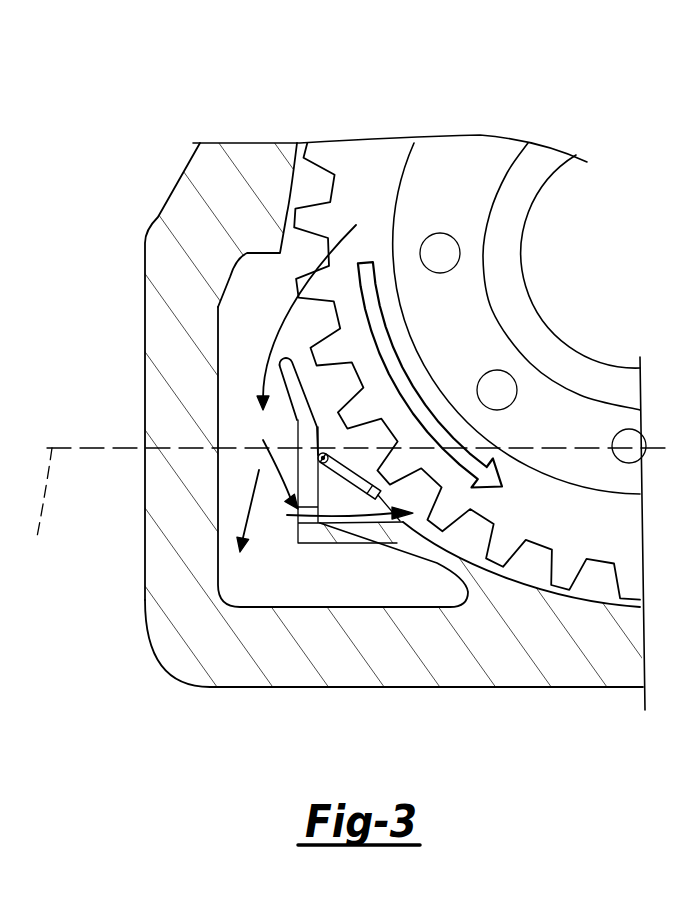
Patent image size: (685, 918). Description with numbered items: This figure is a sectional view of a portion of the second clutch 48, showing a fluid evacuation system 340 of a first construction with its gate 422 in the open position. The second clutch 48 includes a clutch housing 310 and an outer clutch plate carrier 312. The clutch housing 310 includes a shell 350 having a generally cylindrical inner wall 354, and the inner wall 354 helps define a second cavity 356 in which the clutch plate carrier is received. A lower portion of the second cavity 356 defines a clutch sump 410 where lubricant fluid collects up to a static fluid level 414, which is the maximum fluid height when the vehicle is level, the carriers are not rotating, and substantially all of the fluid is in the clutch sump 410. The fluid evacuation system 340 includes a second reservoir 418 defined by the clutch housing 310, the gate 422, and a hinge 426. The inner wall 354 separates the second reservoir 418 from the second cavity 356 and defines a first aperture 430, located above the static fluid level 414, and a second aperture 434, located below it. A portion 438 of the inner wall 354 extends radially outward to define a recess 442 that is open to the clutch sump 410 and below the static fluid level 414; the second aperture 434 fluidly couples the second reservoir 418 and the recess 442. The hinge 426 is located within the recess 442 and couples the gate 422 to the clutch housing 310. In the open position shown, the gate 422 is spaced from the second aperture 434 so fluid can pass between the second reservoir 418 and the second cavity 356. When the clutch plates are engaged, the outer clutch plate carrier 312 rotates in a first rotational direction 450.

The second clutch 48 is at (146, 95).
The clutch housing 310 is at (158, 217).
The outer clutch plate carrier 312 is at (373, 157).
The fluid evacuation system 340 is at (207, 368).
The shell 350 is at (145, 617).
The inner wall 354 is at (500, 584).
The second cavity 356 is at (303, 178).
The clutch sump 410 is at (532, 560).
The static fluid level 414 is at (40, 507).
The second reservoir 418 is at (237, 503).
The gate 422 is at (355, 477).
The hinge 426 is at (323, 454).
The first aperture 430 is at (316, 304).
The second aperture 434 is at (303, 527).
The portion of the inner wall 438 is at (307, 430).
The recess 442 is at (358, 525).
The first rotational direction 450 is at (387, 337).